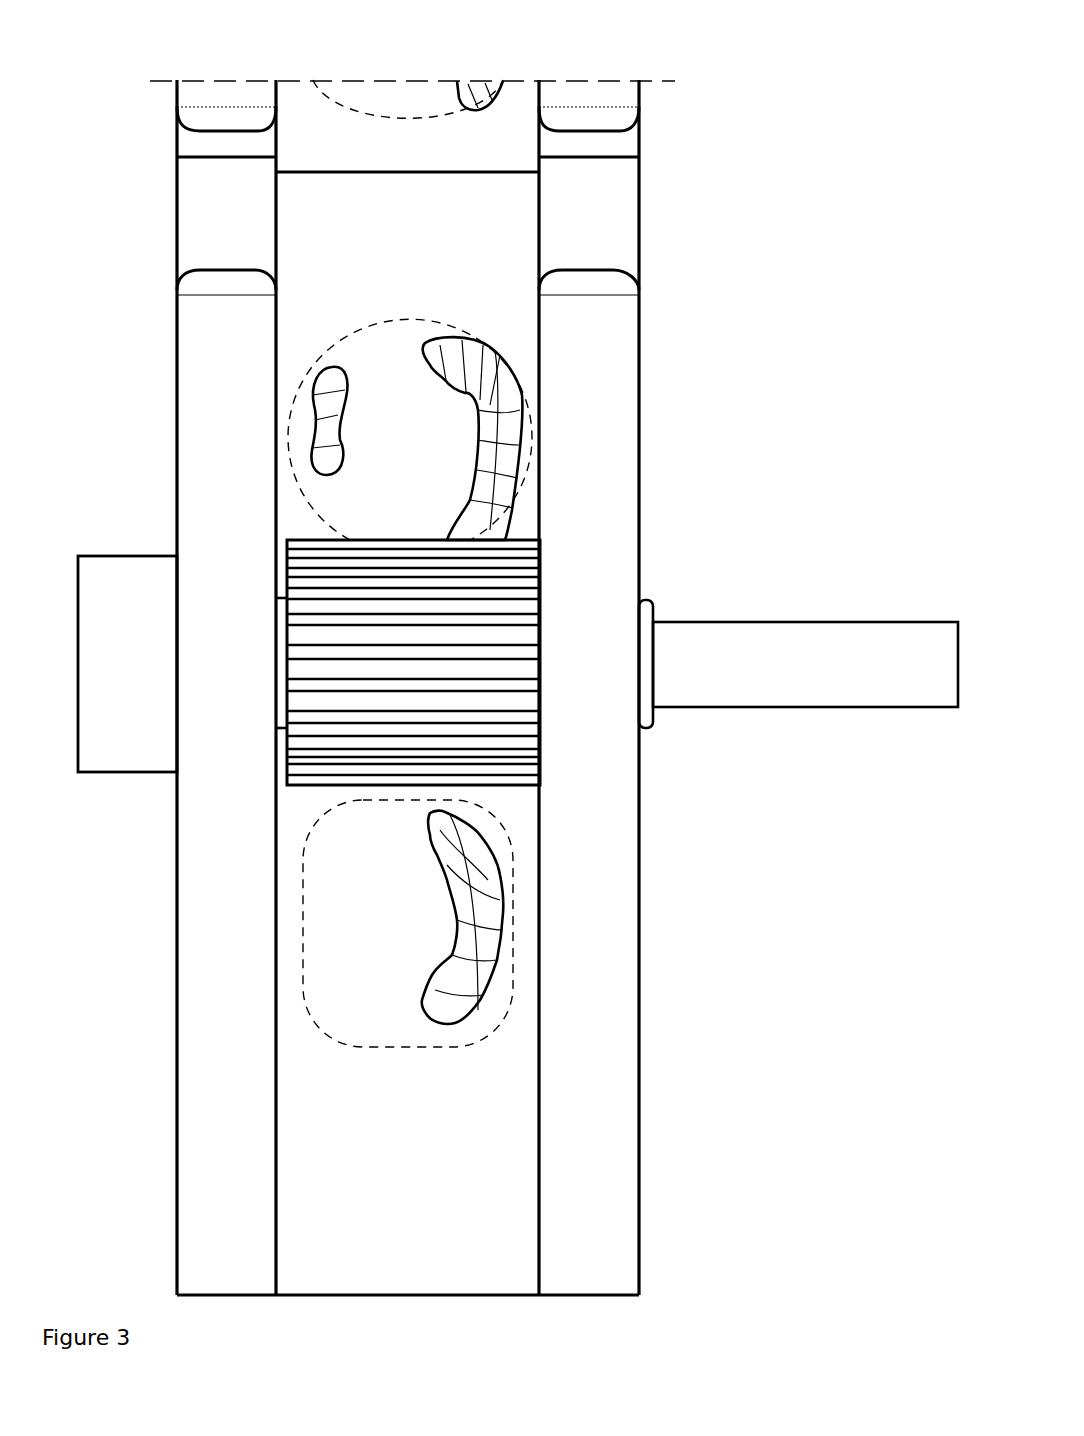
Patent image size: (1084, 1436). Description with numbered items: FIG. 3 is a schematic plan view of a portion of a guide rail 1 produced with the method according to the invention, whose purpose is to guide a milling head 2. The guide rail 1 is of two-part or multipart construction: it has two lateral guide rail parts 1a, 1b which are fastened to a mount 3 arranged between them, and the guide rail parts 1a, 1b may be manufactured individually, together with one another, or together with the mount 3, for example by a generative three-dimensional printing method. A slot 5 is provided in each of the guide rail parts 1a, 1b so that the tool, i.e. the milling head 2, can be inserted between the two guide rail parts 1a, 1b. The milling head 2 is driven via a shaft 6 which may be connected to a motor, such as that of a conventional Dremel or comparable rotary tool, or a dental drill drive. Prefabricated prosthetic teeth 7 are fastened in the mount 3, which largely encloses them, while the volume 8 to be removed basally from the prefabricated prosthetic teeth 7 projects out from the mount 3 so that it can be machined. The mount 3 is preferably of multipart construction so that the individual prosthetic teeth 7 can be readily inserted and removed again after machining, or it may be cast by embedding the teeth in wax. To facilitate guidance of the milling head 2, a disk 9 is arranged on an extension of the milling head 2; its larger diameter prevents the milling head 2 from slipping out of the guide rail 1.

The guide rail 1 is at (575, 97).
The guide rail part 1a is at (207, 1130).
The guide rail part 1b is at (573, 765).
The milling head 2 is at (440, 683).
The mount 3 is at (428, 147).
The slot 5 is at (202, 202).
The shaft 6 is at (267, 663).
The prefabricated prosthetic teeth 7 is at (380, 103).
The volume to be removed 8 is at (470, 93).
The disk 9 is at (124, 706).